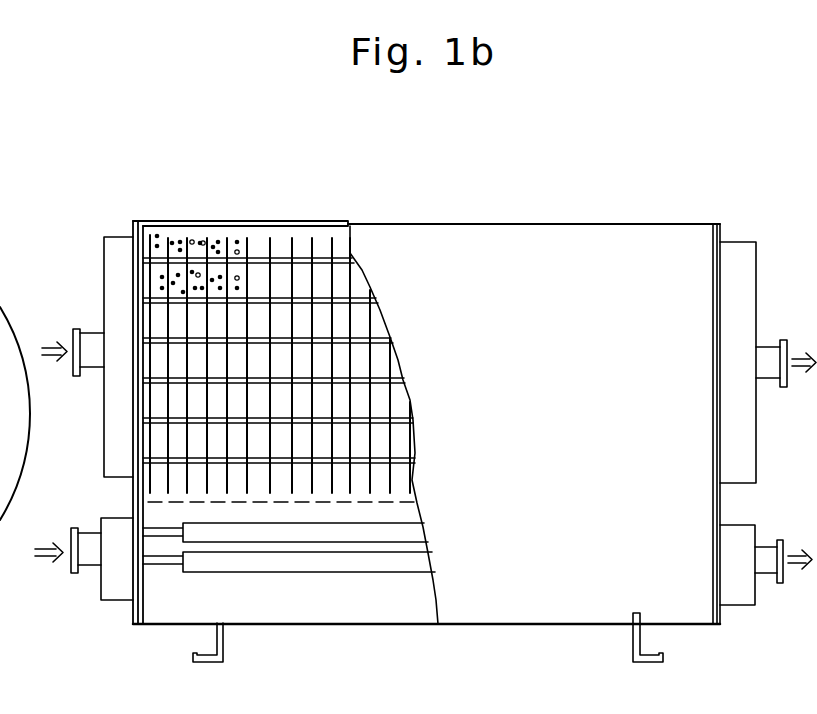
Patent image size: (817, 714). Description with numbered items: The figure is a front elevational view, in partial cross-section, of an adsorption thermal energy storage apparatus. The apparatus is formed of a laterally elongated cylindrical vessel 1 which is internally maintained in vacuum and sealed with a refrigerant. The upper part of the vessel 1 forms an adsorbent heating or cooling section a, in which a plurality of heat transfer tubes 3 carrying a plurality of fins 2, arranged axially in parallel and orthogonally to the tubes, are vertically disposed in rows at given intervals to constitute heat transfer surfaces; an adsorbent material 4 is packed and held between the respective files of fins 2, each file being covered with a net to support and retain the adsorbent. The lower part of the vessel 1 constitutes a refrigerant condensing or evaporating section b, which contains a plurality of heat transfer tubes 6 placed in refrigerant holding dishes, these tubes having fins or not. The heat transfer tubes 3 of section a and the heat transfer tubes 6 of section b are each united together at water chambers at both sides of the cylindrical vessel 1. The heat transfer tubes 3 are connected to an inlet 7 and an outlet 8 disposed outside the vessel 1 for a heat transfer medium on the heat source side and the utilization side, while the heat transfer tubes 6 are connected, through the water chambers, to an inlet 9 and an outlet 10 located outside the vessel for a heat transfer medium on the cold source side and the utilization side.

The cylindrical vessel 1 is at (422, 223).
The fins 2 is at (252, 245).
The heat transfer tubes 3 is at (151, 257).
The adsorbent material 4 is at (175, 235).
The heat transfer tubes 6 is at (170, 565).
The inlet 7 is at (87, 340).
The outlet 8 is at (767, 355).
The inlet 9 is at (87, 543).
The outlet 10 is at (765, 555).
The adsorbent heating or cooling section a is at (132, 228).
The refrigerant condensing or evaporating section b is at (253, 592).